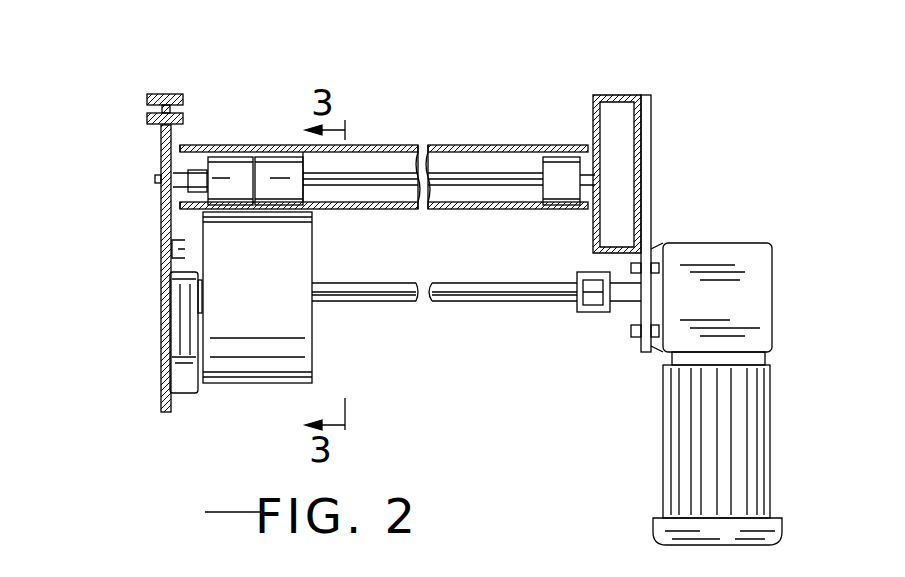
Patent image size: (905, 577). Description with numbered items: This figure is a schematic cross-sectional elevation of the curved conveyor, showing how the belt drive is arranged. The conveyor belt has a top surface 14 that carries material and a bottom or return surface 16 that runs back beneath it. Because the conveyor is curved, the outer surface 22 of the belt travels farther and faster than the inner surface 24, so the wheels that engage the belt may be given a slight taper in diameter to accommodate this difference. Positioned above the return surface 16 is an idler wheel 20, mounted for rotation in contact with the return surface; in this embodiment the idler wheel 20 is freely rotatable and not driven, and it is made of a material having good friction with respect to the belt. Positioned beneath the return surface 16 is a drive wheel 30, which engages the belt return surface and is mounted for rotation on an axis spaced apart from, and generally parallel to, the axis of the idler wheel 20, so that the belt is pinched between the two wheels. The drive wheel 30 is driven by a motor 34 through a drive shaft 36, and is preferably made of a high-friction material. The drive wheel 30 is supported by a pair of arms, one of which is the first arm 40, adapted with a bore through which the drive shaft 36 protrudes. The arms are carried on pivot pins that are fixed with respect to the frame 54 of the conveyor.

The top surface 14 is at (470, 128).
The bottom or return surface 16 is at (470, 209).
The idler wheel 20 is at (284, 152).
The outer surface 22 is at (197, 145).
The inner surface 24 is at (572, 143).
The drive wheel 30 is at (312, 350).
The motor 34 is at (752, 242).
The drive shaft 36 is at (512, 305).
The first arm 40 is at (172, 322).
The frame 54 is at (172, 250).